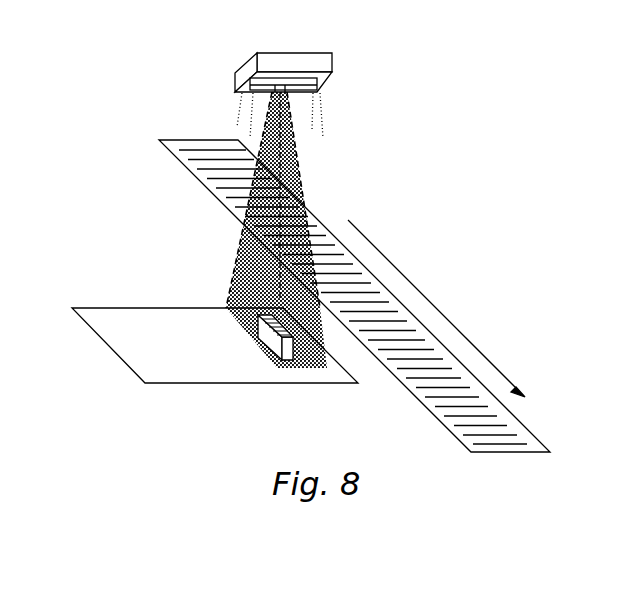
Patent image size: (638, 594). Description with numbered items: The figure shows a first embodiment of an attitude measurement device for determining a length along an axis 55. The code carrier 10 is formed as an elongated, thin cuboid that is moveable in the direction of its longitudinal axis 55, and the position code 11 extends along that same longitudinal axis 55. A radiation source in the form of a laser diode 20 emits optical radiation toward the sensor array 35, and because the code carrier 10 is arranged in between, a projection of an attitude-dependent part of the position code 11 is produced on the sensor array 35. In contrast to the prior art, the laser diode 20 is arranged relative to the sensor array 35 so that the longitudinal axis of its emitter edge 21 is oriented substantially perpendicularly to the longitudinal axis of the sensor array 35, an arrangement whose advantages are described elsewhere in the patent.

The code carrier 10 is at (299, 265).
The position code 11 is at (316, 297).
The laser diode 20 is at (323, 53).
The emitter edge 21 is at (240, 49).
The sensor array 35 is at (313, 371).
The longitudinal axis 55 is at (439, 308).